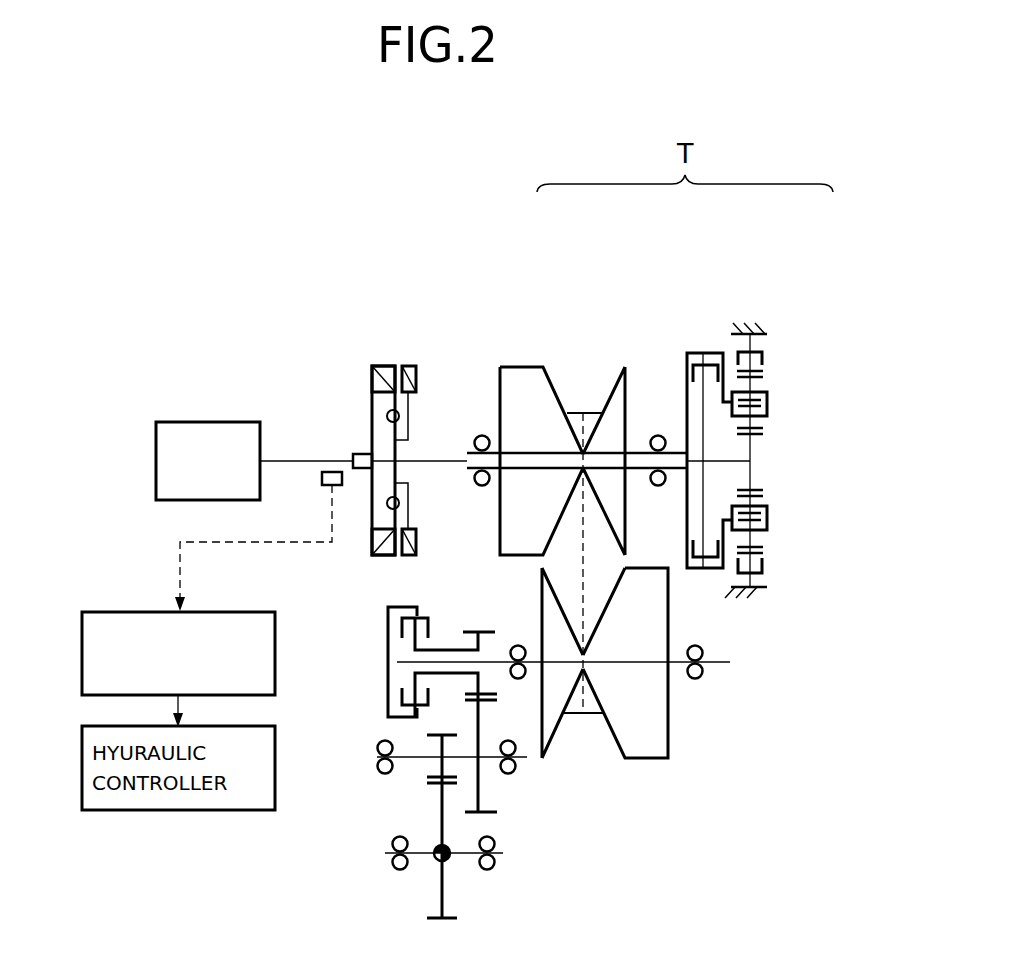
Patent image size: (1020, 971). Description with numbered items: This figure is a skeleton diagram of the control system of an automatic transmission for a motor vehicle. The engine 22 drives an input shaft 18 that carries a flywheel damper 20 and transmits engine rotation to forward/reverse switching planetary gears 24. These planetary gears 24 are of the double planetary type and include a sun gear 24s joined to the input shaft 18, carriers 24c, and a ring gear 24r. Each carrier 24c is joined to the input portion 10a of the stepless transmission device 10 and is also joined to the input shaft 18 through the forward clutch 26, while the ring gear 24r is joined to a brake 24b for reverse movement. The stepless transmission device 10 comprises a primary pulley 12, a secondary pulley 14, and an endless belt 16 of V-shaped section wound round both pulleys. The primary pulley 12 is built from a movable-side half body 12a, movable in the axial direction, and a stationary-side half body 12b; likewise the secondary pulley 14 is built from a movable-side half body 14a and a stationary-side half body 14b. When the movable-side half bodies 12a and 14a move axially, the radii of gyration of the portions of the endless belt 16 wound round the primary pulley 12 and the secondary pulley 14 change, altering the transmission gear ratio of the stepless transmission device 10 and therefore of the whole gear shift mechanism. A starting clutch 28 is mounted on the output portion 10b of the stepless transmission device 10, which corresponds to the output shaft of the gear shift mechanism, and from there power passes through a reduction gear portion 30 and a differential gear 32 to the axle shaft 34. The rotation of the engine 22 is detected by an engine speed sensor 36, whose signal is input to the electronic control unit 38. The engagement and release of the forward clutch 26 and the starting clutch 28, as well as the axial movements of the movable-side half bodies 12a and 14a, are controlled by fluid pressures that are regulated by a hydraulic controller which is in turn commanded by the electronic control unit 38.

The stepless transmission device 10 is at (548, 284).
The input portion 10a is at (641, 445).
The output portion 10b is at (503, 660).
The primary pulley 12 is at (635, 318).
The movable-side half body 12a is at (538, 392).
The stationary-side half body 12b is at (617, 375).
The secondary pulley 14 is at (668, 818).
The movable-side half body 14a is at (640, 740).
The stationary-side half body 14b is at (548, 720).
The endless belt 16 is at (591, 705).
The input shaft 18 is at (447, 452).
The flywheel damper 20 is at (383, 350).
The engine 22 is at (192, 420).
The forward/reverse switching planetary gears 24 is at (783, 442).
The sun gear 24s is at (752, 440).
The carrier 24c is at (767, 512).
The ring gear 24r is at (763, 552).
The brake 24b is at (763, 566).
The forward clutch 26 is at (710, 334).
The starting clutch 28 is at (362, 635).
The reduction gear portion 30 is at (348, 726).
The differential gear 32 is at (458, 876).
The axle shaft 34 is at (425, 856).
The engine speed sensor 36 is at (322, 476).
The electronic control unit 38 is at (118, 610).